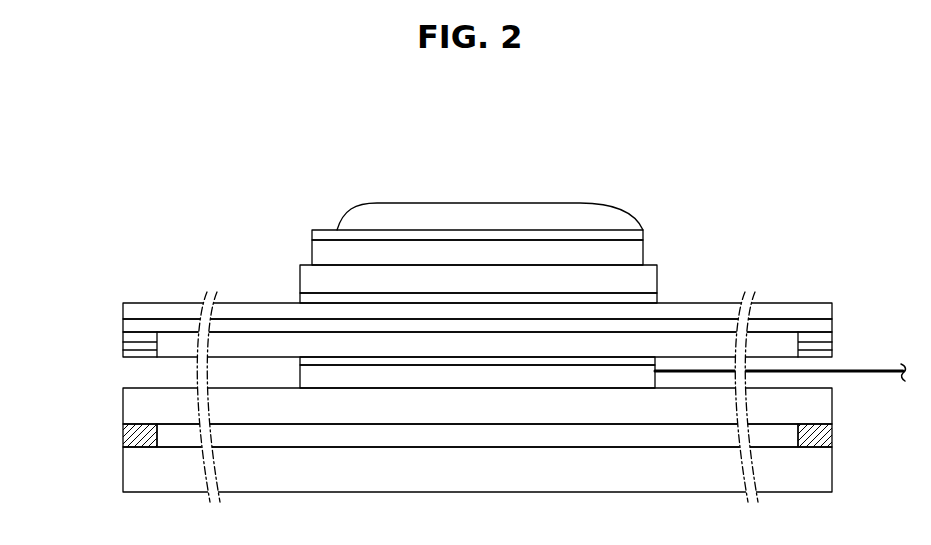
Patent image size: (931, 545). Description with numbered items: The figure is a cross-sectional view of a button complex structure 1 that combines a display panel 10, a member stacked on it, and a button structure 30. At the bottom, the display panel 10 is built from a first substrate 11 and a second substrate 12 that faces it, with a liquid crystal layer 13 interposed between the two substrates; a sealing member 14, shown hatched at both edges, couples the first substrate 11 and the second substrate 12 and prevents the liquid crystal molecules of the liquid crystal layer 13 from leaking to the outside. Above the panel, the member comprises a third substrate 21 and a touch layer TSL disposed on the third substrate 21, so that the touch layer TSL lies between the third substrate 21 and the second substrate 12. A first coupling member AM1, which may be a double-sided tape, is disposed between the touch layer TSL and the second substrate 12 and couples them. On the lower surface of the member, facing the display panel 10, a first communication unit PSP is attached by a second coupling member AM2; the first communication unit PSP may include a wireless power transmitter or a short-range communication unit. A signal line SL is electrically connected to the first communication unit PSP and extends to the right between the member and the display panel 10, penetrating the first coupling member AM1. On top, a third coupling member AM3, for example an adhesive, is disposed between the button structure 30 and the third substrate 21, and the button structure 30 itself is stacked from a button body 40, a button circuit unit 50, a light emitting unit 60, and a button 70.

The button complex structure 1 is at (583, 165).
The display panel 10 is at (60, 402).
The first substrate 11 is at (135, 477).
The second substrate 12 is at (135, 407).
The liquid crystal layer 13 is at (175, 439).
The sealing member 14 is at (130, 430).
The third substrate 21 is at (132, 310).
The touch layer TSL is at (128, 323).
The first coupling member AM1 is at (137, 343).
The second coupling member AM2 is at (618, 362).
The third coupling member AM3 is at (305, 295).
The first communication unit PSP is at (415, 383).
The signal line SL is at (885, 371).
The button structure 30 is at (240, 157).
The button body 40 is at (305, 275).
The button circuit unit 50 is at (313, 252).
The light emitting unit 60 is at (313, 237).
The button 70 is at (353, 220).